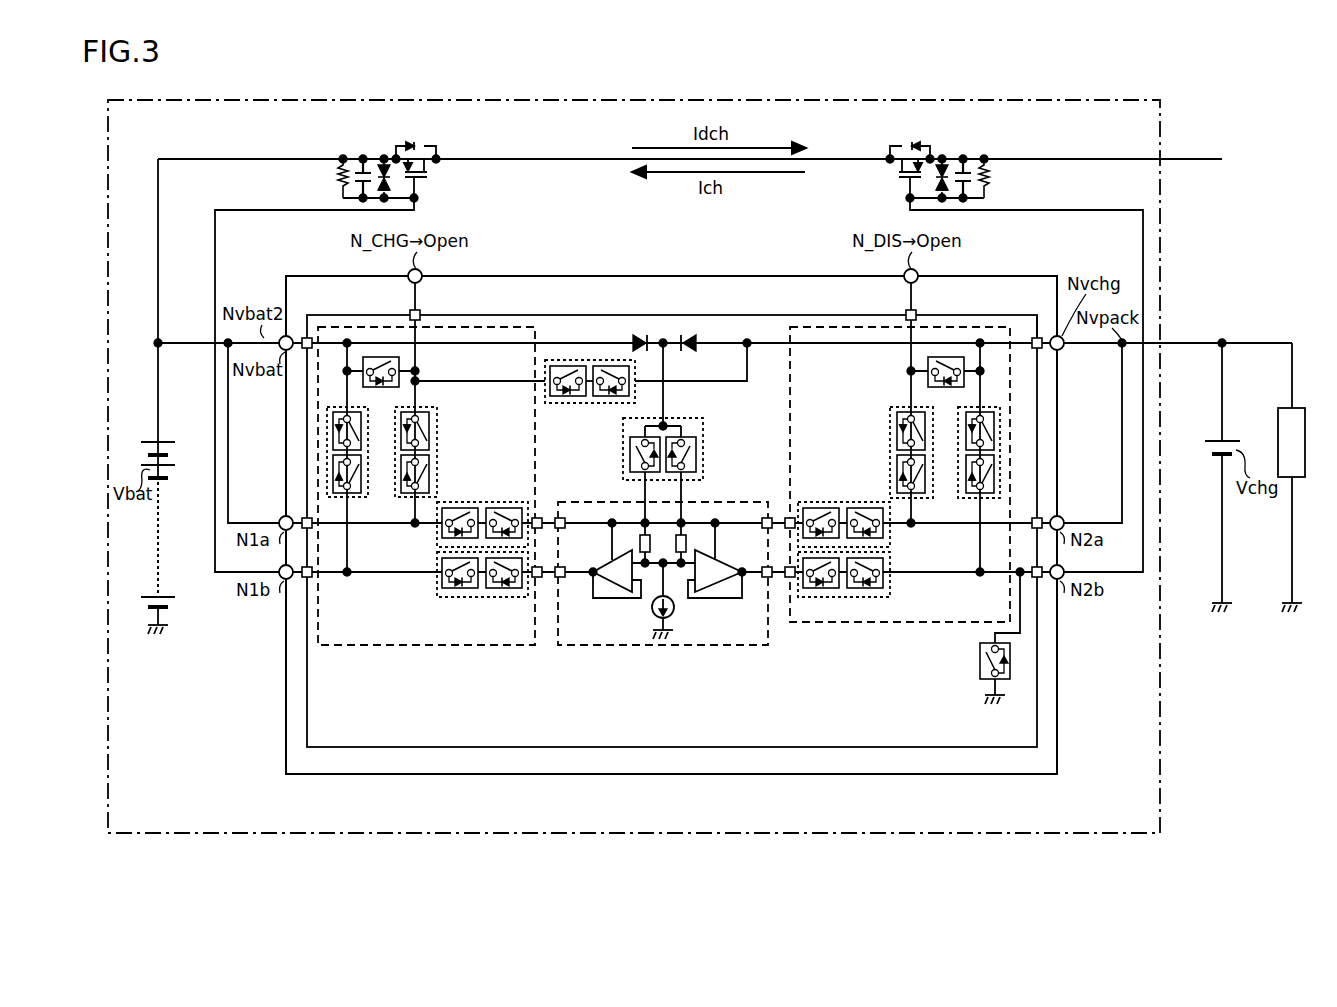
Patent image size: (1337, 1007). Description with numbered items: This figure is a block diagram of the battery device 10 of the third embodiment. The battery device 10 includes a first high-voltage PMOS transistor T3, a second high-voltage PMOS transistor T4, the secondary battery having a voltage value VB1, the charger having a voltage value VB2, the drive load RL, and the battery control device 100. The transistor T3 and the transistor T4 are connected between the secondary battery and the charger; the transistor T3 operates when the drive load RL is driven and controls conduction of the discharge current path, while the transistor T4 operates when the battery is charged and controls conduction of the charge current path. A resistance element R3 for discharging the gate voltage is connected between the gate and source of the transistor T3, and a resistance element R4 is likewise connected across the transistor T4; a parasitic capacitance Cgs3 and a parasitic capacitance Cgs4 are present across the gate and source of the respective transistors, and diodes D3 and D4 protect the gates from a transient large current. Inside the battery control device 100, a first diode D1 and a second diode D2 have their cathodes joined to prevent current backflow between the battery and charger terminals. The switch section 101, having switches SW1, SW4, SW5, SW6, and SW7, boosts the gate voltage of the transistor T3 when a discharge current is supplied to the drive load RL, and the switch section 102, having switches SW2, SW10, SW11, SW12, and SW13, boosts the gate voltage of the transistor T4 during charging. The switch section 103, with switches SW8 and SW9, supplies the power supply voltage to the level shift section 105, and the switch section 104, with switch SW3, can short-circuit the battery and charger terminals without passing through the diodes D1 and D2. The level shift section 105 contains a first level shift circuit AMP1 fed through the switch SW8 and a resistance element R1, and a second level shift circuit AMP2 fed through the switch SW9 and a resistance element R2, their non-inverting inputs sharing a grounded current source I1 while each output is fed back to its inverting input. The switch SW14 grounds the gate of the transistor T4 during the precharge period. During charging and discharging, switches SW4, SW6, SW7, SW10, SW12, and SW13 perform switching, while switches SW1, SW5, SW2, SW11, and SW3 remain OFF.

The battery device 10 is at (820, 100).
The battery control device 100 is at (782, 774).
The switch section 101 is at (400, 645).
The switch section 102 is at (840, 622).
The switch section 103 is at (705, 428).
The switch section 104 is at (576, 360).
The level shift section 105 is at (626, 645).
The switch SW1 is at (381, 357).
The switch SW2 is at (946, 357).
The switch SW3 is at (585, 403).
The switch SW4 is at (372, 462).
The switch SW5 is at (437, 410).
The switch SW6 is at (472, 502).
The switch SW7 is at (472, 597).
The switch SW8 is at (630, 463).
The switch SW9 is at (696, 463).
The switch SW10 is at (1000, 407).
The switch SW11 is at (890, 410).
The switch SW12 is at (862, 502).
The switch SW13 is at (820, 597).
The switch SW14 is at (980, 661).
The first high-voltage PMOS transistor T3 is at (430, 182).
The second high-voltage PMOS transistor T4 is at (898, 188).
The first diode D1 is at (636, 336).
The second diode D2 is at (688, 336).
The diode D3 is at (382, 166).
The diode D4 is at (946, 166).
The resistance element R1 is at (640, 542).
The resistance element R2 is at (686, 542).
The resistance element R3 is at (338, 186).
The resistance element R4 is at (990, 186).
The parasitic capacitance Cgs3 is at (360, 168).
The parasitic capacitance Cgs4 is at (968, 168).
The first level shift circuit AMP1 is at (612, 600).
The second level shift circuit AMP2 is at (722, 600).
The current source I1 is at (676, 612).
The voltage value of the secondary battery VB1 is at (176, 488).
The voltage value of the charger VB2 is at (1204, 477).
The drive load RL is at (1278, 414).